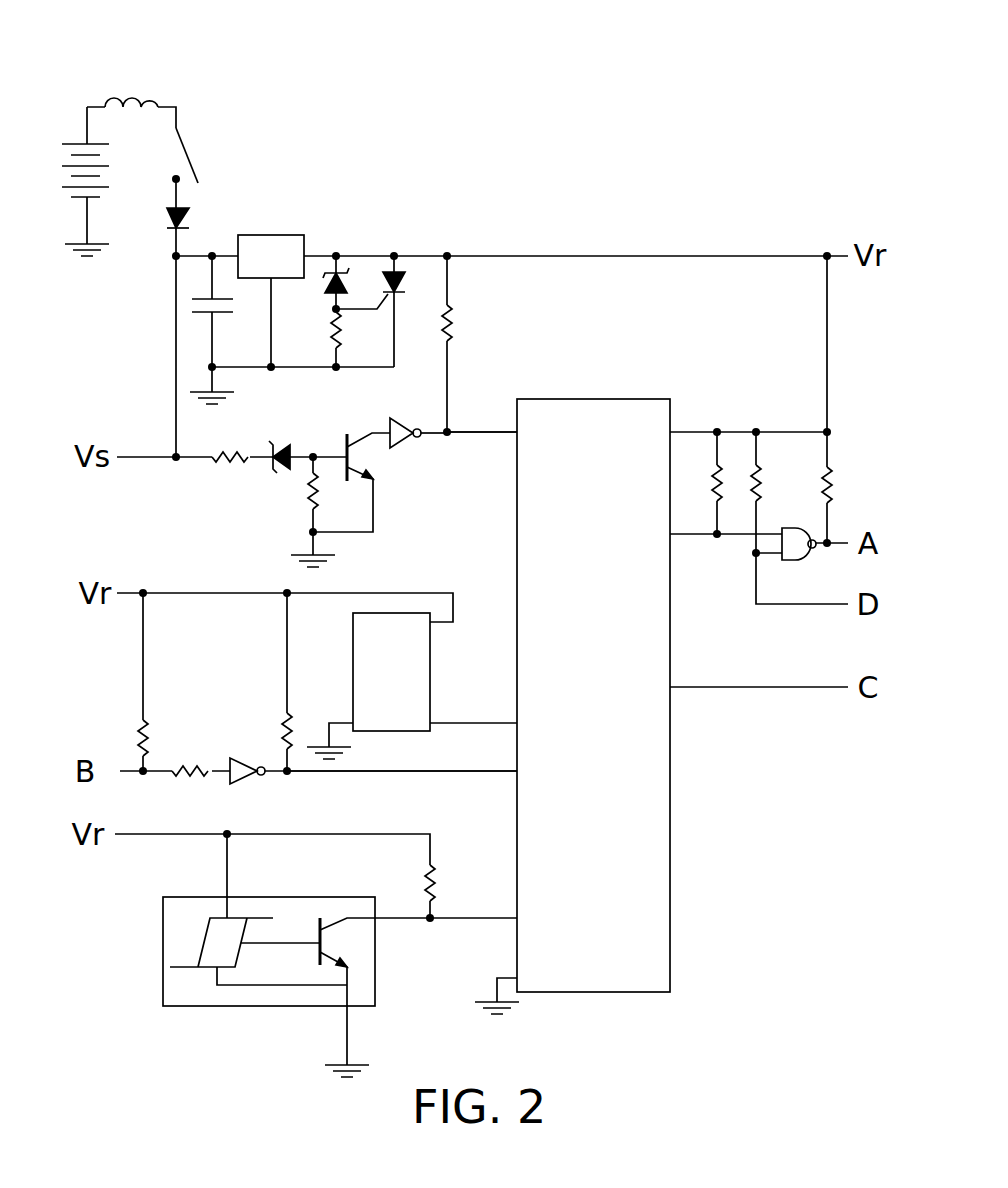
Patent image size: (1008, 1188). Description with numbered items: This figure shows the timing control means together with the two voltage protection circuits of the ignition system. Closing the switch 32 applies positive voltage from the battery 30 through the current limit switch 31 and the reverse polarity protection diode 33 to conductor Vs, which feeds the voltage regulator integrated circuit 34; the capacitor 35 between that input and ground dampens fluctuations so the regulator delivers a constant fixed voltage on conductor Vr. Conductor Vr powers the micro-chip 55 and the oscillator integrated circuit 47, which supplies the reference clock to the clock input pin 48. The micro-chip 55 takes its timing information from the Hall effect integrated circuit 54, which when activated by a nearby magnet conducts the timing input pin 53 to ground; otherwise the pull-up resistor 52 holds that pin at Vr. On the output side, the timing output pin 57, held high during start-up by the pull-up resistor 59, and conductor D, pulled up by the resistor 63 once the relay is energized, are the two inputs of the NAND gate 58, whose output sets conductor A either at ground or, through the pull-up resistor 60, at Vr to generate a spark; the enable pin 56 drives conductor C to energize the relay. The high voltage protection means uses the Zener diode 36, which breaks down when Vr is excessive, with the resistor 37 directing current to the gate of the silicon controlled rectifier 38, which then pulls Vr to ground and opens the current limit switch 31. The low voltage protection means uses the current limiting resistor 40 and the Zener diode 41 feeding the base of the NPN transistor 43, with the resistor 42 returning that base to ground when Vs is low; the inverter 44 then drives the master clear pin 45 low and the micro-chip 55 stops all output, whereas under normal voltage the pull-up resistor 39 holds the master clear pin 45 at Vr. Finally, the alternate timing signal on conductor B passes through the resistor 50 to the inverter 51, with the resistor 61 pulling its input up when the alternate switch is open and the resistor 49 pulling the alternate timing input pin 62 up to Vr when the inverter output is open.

The battery 30 is at (72, 142).
The current limit switch 31 is at (104, 98).
The switch 32 is at (187, 142).
The reverse polarity protection diode 33 is at (167, 213).
The voltage regulator integrated circuit 34 is at (272, 235).
The capacitor 35 is at (222, 312).
The Zener diode 36 is at (325, 288).
The resistor 37 is at (330, 338).
The silicon controlled rectifier 38 is at (402, 282).
The pull-up resistor 39 is at (447, 345).
The current limiting resistor 40 is at (226, 452).
The Zener diode 41 is at (283, 447).
The resistor 42 is at (306, 505).
The NPN transistor 43 is at (344, 432).
The inverter 44 is at (406, 452).
The master clear pin 45 is at (509, 432).
The oscillator integrated circuit 47 is at (353, 665).
The clock input pin 48 is at (512, 722).
The resistor 49 is at (285, 733).
The resistor 50 is at (195, 780).
The inverter 51 is at (248, 782).
The pull-up resistor 52 is at (440, 868).
The timing input pin 53 is at (505, 920).
The Hall effect integrated circuit 54 is at (165, 1008).
The micro-chip 55 is at (670, 930).
The enable pin 56 is at (680, 689).
The timing output pin 57 is at (680, 536).
The NAND gate 58 is at (798, 528).
The pull-up resistor 59 is at (715, 478).
The pull-up resistor 60 is at (835, 490).
The resistor 61 is at (146, 720).
The alternate timing input pin 62 is at (510, 776).
The resistor 63 is at (757, 468).